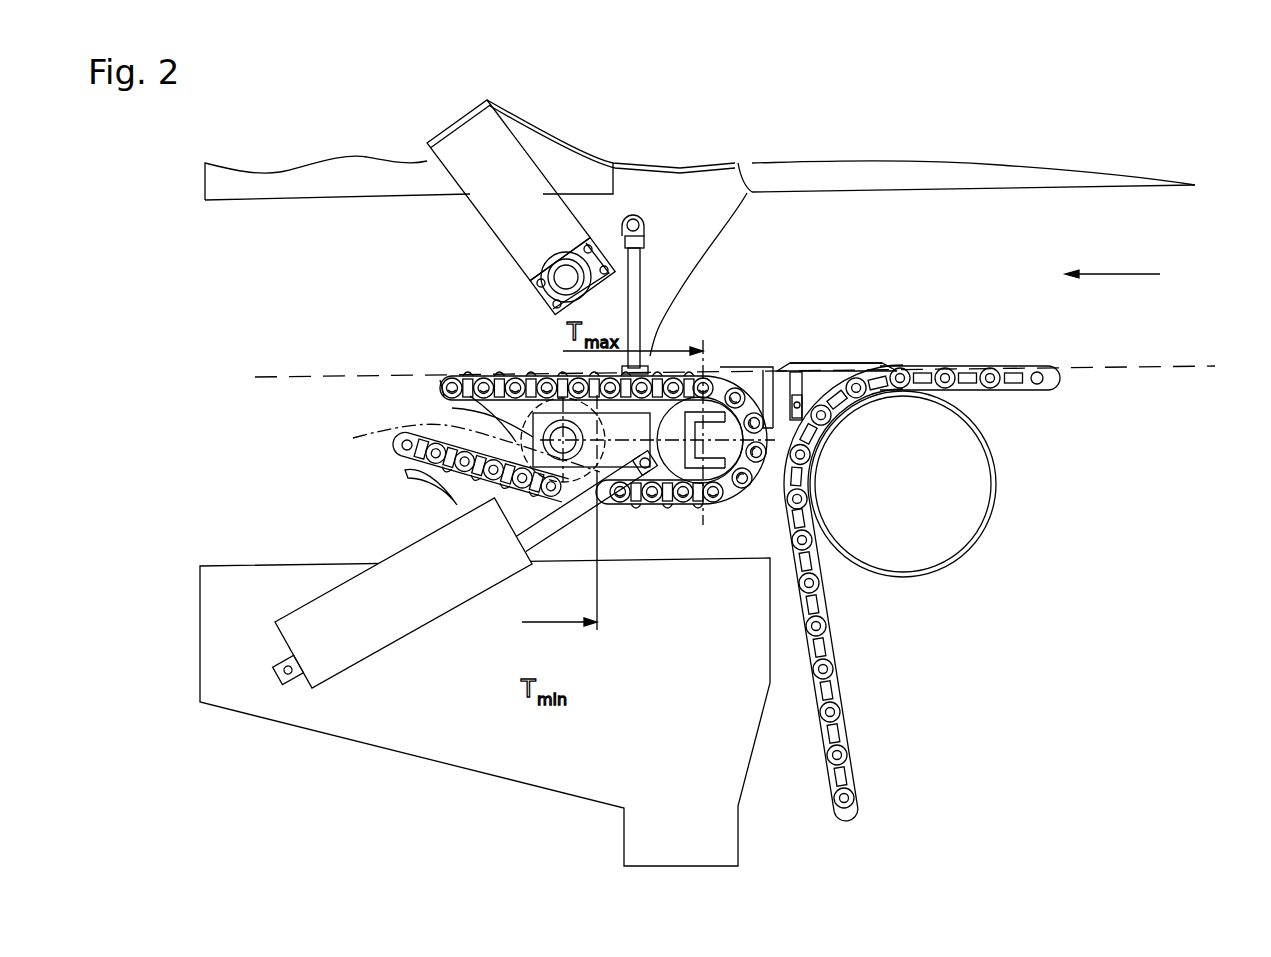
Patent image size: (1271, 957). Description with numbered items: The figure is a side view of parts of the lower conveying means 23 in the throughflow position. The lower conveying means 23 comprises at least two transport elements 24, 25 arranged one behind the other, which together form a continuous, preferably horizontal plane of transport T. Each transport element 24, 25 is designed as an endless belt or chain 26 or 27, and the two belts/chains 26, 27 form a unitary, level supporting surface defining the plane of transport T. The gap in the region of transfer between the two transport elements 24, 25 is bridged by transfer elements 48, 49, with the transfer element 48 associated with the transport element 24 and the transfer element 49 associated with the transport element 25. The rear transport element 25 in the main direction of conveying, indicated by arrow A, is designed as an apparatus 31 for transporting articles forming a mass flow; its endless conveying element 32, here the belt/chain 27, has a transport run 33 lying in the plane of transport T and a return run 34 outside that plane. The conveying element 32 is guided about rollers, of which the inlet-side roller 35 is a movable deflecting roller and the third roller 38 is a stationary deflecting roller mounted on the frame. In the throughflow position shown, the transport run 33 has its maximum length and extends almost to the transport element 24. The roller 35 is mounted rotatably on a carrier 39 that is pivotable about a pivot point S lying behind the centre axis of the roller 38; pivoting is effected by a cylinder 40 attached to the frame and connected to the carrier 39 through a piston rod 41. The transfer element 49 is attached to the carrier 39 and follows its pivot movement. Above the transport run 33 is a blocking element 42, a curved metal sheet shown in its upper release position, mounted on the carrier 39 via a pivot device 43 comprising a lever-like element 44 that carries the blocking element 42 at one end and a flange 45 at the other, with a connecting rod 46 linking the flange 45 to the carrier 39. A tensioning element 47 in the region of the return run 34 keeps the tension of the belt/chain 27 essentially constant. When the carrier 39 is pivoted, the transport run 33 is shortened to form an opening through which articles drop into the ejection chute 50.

The lower conveying means 23 is at (958, 334).
The transport element 24 is at (1036, 462).
The transport element 25 is at (470, 373).
The belt or chain 26 is at (827, 646).
The belt or chain 27 is at (497, 377).
The apparatus for transporting articles 31 is at (779, 334).
The conveying element 32 is at (437, 368).
The transport run 33 is at (750, 190).
The return run 34 is at (683, 529).
The roller 35 is at (727, 507).
The third roller 38 is at (560, 372).
The carrier 39 is at (452, 408).
The cylinder 40 is at (338, 666).
The piston rod 41 is at (513, 537).
The blocking element 42 is at (697, 160).
The pivot device 43 is at (597, 203).
The lever-like element 44 is at (463, 143).
The flange 45 is at (618, 226).
The connecting rod 46 is at (673, 328).
The tensioning element 47 is at (414, 487).
The transfer element 48 is at (870, 363).
The transfer element 49 is at (753, 360).
The ejection chute 50 is at (727, 845).
The main direction of conveying A is at (1112, 261).
The pivot point S is at (463, 448).
The plane of transport T is at (1172, 360).